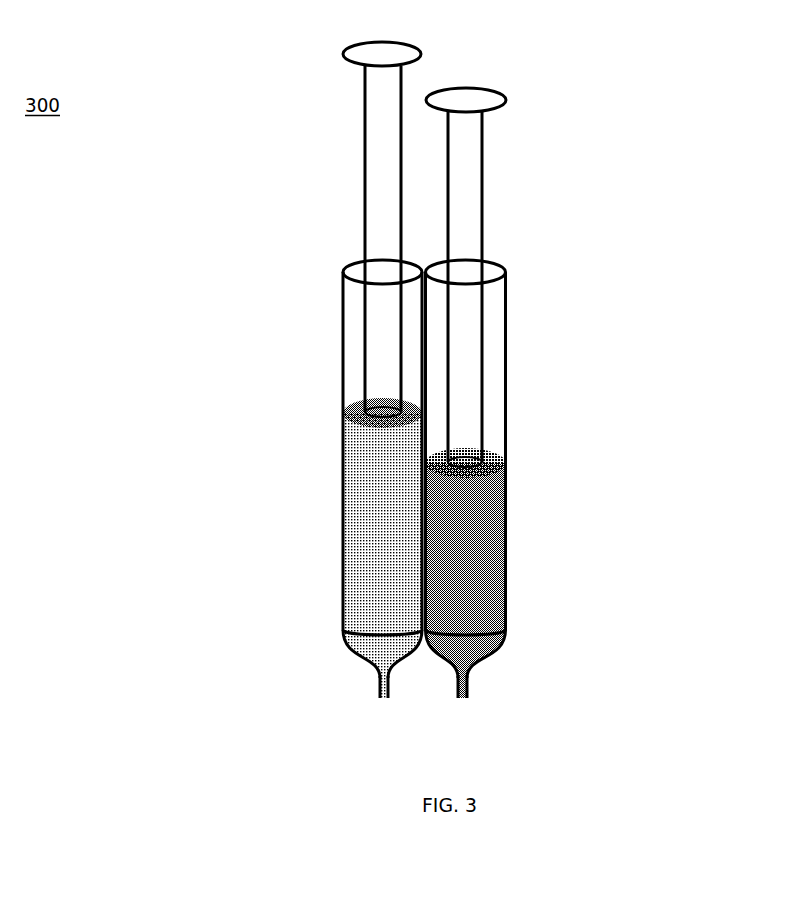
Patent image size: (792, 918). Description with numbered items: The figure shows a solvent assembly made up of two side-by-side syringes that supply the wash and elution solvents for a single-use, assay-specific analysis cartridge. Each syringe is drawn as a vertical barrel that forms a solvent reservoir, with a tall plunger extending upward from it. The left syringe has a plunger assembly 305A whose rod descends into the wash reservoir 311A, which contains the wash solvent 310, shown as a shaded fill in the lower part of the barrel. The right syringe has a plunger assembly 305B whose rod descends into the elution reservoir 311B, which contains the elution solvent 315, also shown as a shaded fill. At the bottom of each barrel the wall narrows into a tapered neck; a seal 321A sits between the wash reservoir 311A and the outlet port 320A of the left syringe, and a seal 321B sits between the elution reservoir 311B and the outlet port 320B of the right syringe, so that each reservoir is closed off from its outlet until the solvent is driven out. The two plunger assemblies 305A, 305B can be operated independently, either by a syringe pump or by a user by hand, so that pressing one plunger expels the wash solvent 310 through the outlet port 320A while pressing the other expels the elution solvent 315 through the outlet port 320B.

The plunger assembly 305A is at (380, 355).
The plunger assembly 305B is at (470, 398).
The wash solvent 310 is at (365, 448).
The wash reservoir 311A is at (367, 532).
The elution solvent 315 is at (482, 500).
The elution reservoir 311B is at (470, 595).
The seal 321A is at (380, 675).
The seal 321B is at (466, 668).
The outlet port 320A is at (378, 695).
The outlet port 320B is at (470, 695).